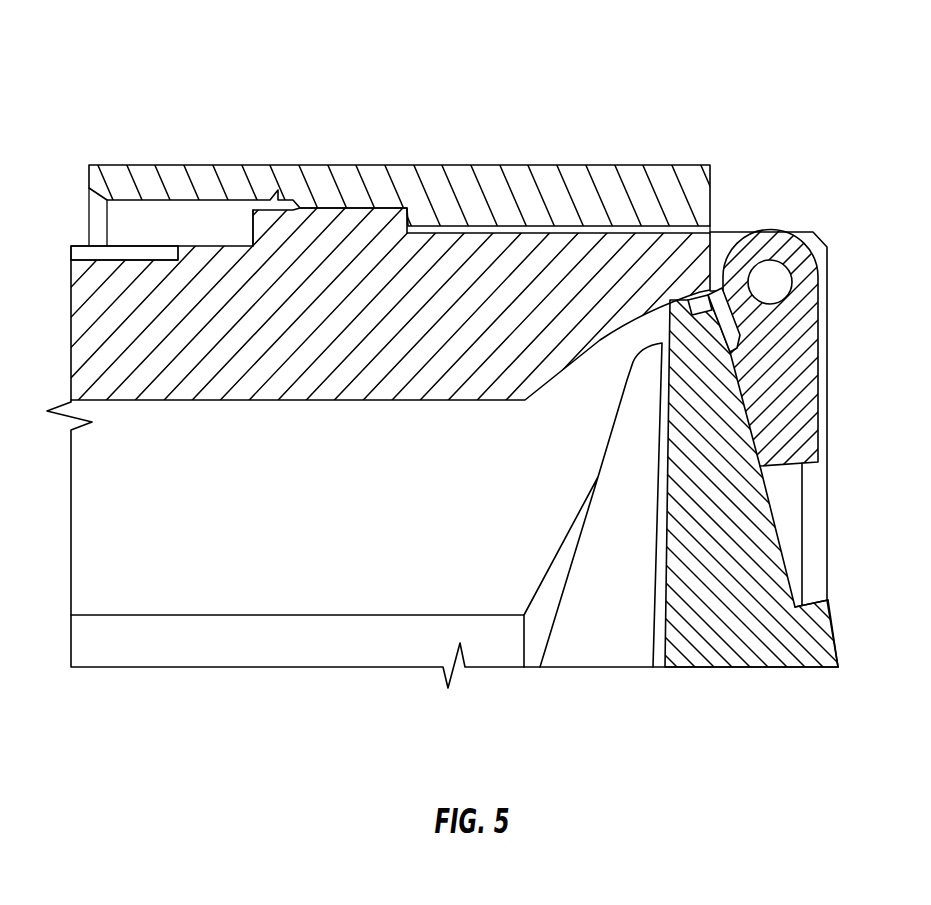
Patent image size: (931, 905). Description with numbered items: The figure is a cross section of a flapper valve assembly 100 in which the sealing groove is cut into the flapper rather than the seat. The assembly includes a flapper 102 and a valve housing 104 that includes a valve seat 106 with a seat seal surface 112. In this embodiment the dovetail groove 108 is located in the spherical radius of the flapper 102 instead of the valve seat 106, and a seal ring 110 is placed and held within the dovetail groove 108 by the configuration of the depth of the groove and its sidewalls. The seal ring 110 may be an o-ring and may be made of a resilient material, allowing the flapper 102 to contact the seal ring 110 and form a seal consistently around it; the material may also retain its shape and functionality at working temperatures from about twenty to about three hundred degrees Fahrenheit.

The flapper valve assembly 100 is at (137, 43).
The flapper 102 is at (744, 592).
The valve housing 104 is at (138, 667).
The valve seat 106 is at (610, 327).
The dovetail groove 108 is at (708, 292).
The seal ring 110 is at (740, 228).
The seat seal surface 112 is at (697, 306).